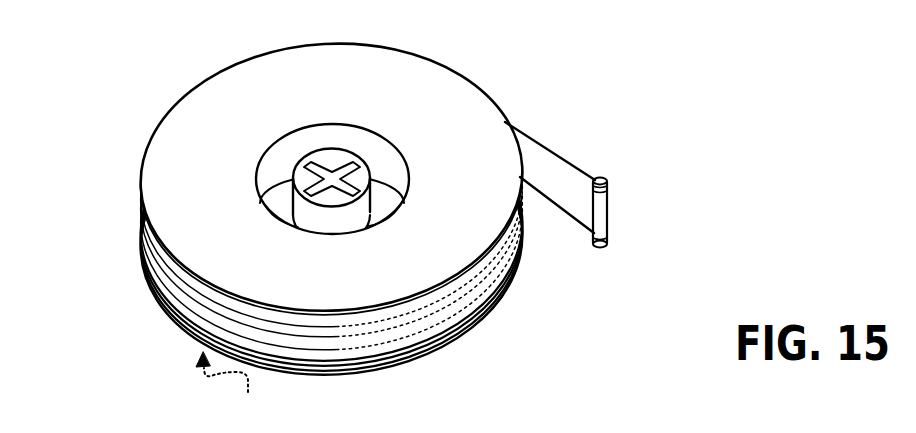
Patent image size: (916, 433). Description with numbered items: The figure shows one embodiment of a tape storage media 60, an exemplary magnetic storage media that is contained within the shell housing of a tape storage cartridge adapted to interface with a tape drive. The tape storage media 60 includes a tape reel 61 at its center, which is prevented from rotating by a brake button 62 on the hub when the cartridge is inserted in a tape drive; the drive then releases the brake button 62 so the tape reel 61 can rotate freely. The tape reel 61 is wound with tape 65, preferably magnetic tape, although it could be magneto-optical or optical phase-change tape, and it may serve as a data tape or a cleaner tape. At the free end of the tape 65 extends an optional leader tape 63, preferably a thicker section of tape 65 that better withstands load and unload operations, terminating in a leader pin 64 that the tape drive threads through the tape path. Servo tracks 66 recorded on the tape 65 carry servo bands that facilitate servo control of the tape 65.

The tape storage media 60 is at (465, 38).
The tape reel 61 is at (198, 98).
The brake button 62 is at (338, 157).
The leader tape 63 is at (545, 148).
The leader pin 64 is at (602, 177).
The tape 65 is at (394, 352).
The servo tracks 66 is at (227, 387).